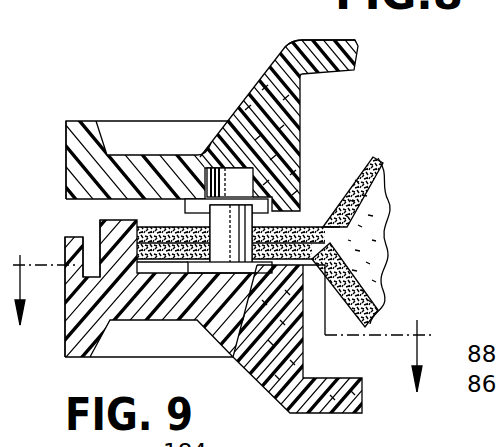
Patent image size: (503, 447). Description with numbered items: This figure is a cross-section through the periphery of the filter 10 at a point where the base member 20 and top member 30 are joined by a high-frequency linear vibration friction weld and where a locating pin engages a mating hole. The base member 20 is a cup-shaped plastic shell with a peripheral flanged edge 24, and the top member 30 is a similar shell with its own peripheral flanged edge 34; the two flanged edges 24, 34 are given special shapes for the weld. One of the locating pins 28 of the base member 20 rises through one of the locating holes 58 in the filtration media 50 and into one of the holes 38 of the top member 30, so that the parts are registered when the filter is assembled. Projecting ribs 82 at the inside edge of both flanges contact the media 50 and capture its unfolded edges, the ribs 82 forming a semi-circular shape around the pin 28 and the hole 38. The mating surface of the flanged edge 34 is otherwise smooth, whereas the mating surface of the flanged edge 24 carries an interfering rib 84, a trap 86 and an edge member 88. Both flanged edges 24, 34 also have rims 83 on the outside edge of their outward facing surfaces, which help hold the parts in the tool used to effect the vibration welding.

The filter 10 is at (226, 308).
The base member 20 is at (247, 392).
The peripheral flanged edge 24 is at (190, 322).
The locating pins 28 is at (300, 135).
The top member 30 is at (279, 42).
The peripheral flanged edge 34 is at (143, 155).
The holes 38 is at (224, 170).
The filtration media 50 is at (388, 190).
The locating holes 58 is at (262, 290).
The projecting ribs 82 is at (293, 205).
The rims 83 is at (80, 121).
The interfering rib 84 is at (88, 277).
The trap 86 is at (112, 322).
The edge member 88 is at (100, 224).